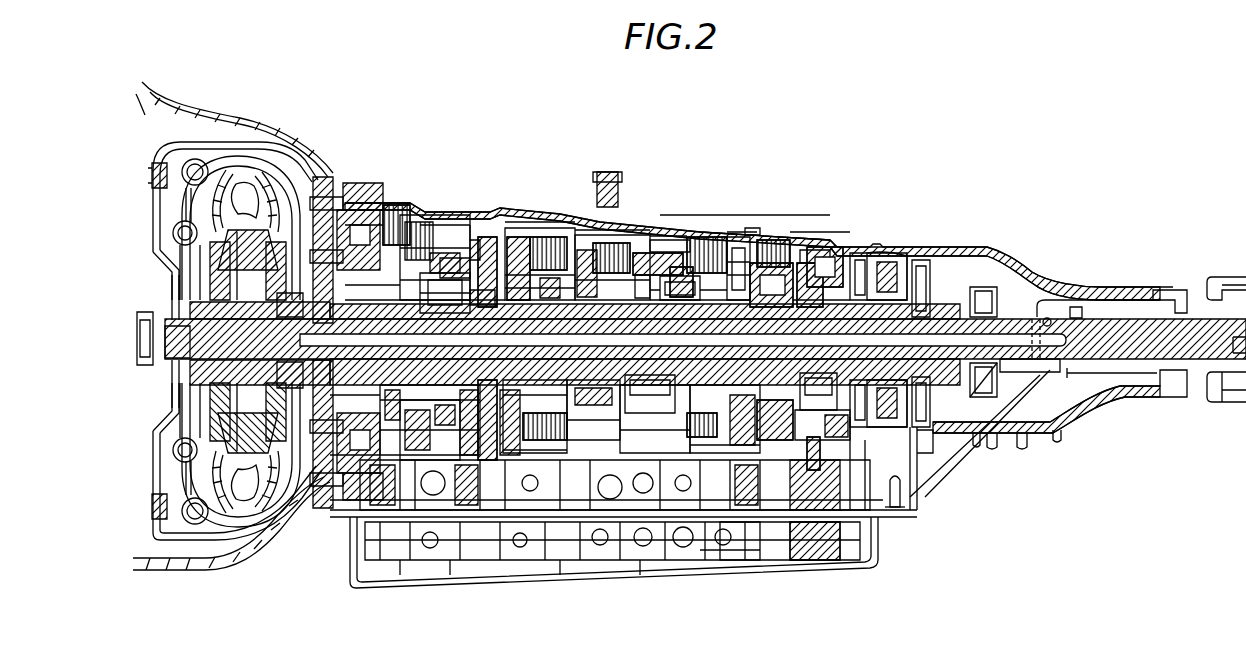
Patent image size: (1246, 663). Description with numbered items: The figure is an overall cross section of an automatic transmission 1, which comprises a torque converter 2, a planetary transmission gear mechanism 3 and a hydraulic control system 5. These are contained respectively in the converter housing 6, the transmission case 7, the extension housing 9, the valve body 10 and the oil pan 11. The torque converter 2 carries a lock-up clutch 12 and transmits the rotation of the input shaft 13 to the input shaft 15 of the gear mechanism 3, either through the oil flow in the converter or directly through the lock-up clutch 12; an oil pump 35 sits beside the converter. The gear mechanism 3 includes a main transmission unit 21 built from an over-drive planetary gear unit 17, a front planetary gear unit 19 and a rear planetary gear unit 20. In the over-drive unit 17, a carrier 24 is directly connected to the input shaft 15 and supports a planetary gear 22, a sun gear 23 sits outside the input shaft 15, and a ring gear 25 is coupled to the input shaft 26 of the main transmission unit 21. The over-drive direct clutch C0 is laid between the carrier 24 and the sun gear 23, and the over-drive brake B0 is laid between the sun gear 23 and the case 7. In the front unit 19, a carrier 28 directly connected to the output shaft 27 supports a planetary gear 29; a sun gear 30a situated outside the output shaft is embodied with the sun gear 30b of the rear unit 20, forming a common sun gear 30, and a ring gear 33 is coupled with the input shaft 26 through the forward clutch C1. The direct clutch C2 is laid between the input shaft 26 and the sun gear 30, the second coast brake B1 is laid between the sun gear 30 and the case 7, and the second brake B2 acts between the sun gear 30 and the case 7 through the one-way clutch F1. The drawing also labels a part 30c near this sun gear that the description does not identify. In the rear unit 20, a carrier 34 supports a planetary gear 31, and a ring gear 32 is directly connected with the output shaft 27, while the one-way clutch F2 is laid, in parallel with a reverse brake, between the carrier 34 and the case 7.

The automatic transmission 1 is at (676, 148).
The torque converter 2 is at (269, 122).
The planetary transmission gear mechanism 3 is at (718, 181).
The hydraulic control system 5 is at (641, 586).
The converter housing 6 is at (323, 176).
The transmission case 7 is at (510, 213).
The extension housing 9 is at (1060, 282).
The valve body 10 is at (730, 562).
The oil pan 11 is at (688, 582).
The lock-up clutch 12 is at (178, 165).
The input shaft 13 is at (144, 325).
The input shaft of transmission gear mechanism 15 is at (296, 310).
The over-drive planetary gear unit 17 is at (447, 290).
The front planetary gear unit 19 is at (677, 252).
The rear planetary gear unit 20 is at (845, 272).
The main transmission unit 21 is at (752, 230).
The planetary gear 22 is at (440, 262).
The sun gear 23 is at (482, 295).
The carrier 24 is at (436, 435).
The ring gear 25 is at (478, 245).
The input shaft of main transmission unit 26 is at (525, 238).
The output shaft 27 is at (1115, 326).
The carrier 28 is at (635, 445).
The planetary gear 29 is at (682, 268).
The sun gear 30 is at (760, 264).
The sun gear of front planetary gear unit 30a is at (660, 383).
The sun gear of rear planetary gear unit 30b is at (815, 378).
The brake cylinder 30c is at (653, 240).
The planetary gear 31 is at (832, 262).
The ring gear 32 is at (812, 262).
The ring gear 33 is at (667, 256).
The carrier 34 is at (835, 440).
The oil pump 35 is at (301, 175).
The over-drive brake B0 is at (405, 208).
The second coast brake B1 is at (783, 255).
The second brake B2 is at (710, 240).
The over-drive direct clutch C0 is at (430, 222).
The forward clutch C1 is at (612, 245).
The direct clutch C2 is at (556, 235).
The one-way clutch F1 is at (729, 248).
The one-way clutch F2 is at (804, 262).